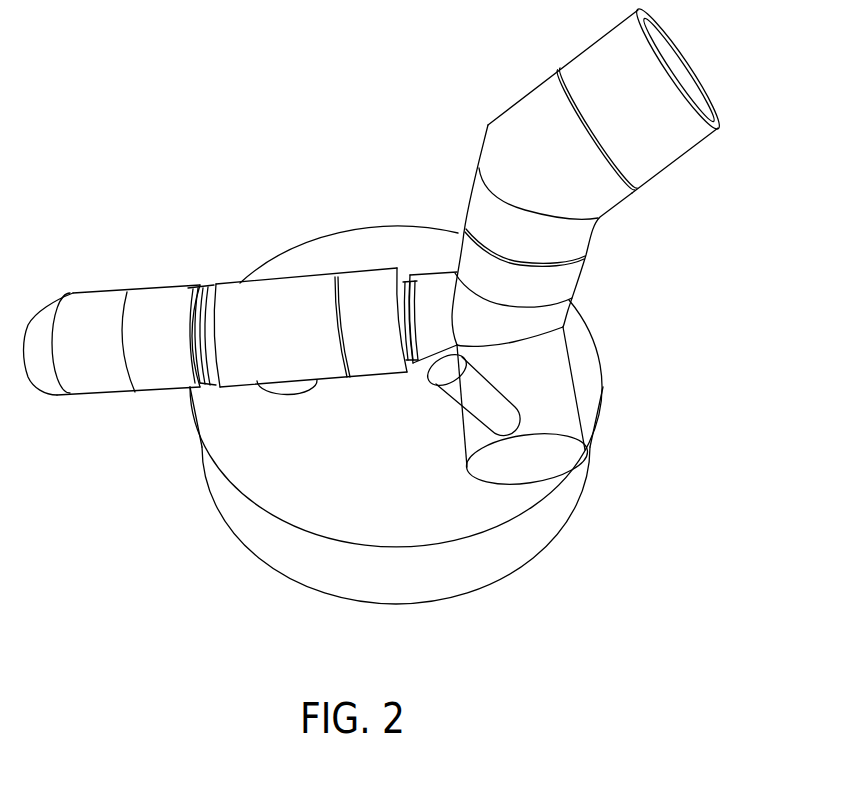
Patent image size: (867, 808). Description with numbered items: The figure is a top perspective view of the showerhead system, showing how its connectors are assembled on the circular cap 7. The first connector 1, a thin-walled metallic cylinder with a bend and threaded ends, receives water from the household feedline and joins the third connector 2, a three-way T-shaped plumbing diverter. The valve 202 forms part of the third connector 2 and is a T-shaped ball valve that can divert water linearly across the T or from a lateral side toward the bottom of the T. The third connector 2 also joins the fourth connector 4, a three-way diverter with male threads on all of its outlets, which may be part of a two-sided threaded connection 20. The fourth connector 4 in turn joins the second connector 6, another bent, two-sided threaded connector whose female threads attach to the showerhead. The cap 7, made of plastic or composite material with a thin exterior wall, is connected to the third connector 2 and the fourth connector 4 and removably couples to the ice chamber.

The first connector 1 is at (598, 190).
The third connector 2 is at (553, 280).
The fourth connector 4 is at (308, 292).
The second connector 6 is at (103, 310).
The cap 7 is at (255, 443).
The two-sided threaded connection 20 is at (376, 247).
The valve 202 is at (560, 397).